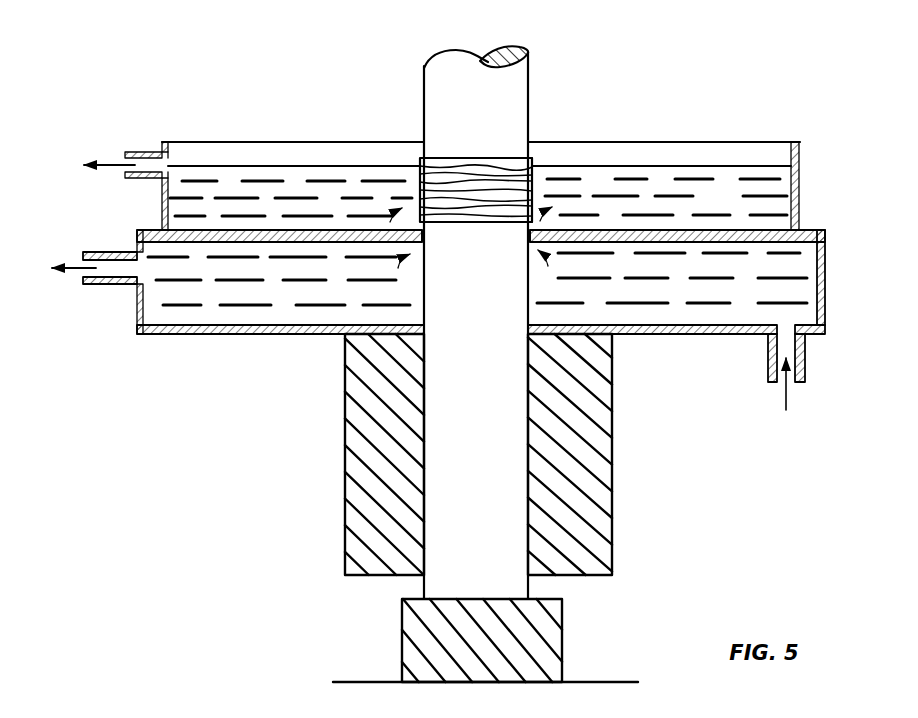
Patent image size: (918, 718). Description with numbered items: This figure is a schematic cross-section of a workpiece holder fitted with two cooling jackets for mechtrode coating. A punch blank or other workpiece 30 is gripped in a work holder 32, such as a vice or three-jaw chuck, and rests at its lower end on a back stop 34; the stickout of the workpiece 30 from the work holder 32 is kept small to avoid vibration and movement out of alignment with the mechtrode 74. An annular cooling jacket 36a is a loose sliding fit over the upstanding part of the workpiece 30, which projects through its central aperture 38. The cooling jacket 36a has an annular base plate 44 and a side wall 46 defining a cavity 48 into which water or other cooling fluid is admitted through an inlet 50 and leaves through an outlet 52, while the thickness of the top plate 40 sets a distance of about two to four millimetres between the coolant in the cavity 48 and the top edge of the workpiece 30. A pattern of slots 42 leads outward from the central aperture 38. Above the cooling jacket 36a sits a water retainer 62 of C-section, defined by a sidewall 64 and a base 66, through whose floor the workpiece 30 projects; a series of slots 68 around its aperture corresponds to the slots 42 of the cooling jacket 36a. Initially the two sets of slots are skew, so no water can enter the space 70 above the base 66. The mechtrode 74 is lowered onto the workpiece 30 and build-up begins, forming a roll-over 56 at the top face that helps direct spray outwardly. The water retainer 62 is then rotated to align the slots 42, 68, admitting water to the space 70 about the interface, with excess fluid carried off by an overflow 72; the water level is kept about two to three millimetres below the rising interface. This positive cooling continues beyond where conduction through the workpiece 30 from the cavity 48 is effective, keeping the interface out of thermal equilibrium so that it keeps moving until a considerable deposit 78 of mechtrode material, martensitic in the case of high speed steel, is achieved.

The workpiece 30 is at (450, 456).
The work holder 32 is at (594, 455).
The back stop 34 is at (415, 630).
The cooling jacket 36a is at (826, 226).
The central aperture 38 is at (523, 243).
The top plate 40 is at (236, 246).
The slots 42 is at (427, 245).
The annular base plate 44 is at (657, 335).
The side wall 46 is at (826, 300).
The cavity 48 is at (793, 267).
The inlet 50 is at (805, 357).
The outlet 52 is at (107, 282).
The roll-over 56 is at (531, 222).
The water retainer 62 is at (806, 172).
The sidewall 64 is at (802, 143).
The base 66 is at (662, 225).
The slots 68 is at (533, 221).
The space 70 is at (296, 162).
The overflow 72 is at (143, 153).
The mechtrode 74 is at (436, 93).
The deposit 78 is at (435, 181).